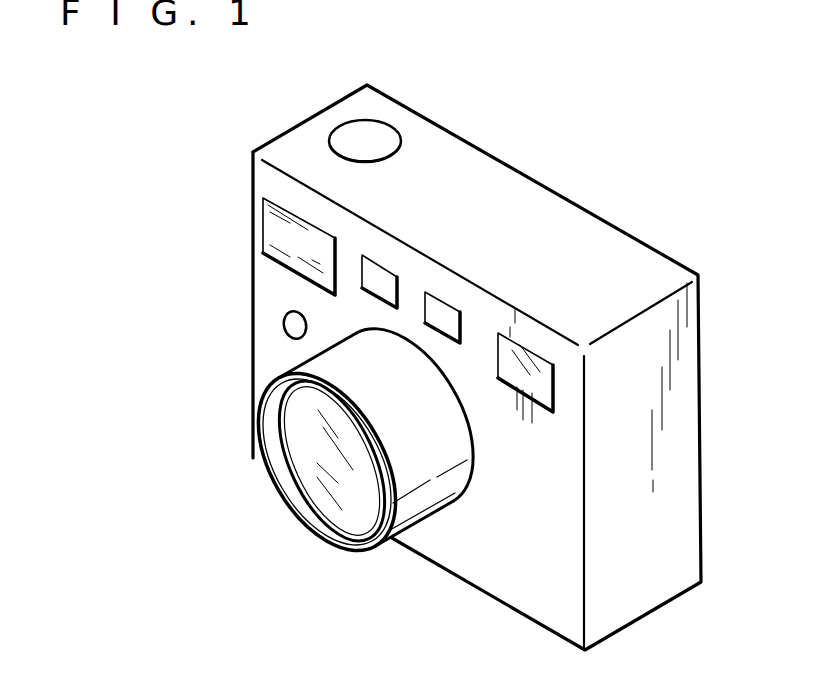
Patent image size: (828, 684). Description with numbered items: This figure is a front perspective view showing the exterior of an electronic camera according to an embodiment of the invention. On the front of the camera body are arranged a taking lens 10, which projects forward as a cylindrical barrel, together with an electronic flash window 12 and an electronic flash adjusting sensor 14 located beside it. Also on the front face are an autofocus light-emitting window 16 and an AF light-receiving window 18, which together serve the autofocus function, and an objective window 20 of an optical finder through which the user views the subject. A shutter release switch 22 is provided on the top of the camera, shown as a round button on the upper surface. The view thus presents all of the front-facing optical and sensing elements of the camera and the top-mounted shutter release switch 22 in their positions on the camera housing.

The taking lens 10 is at (460, 437).
The electronic flash window 12 is at (262, 230).
The electronic flash adjusting sensor 14 is at (283, 322).
The autofocus (AF) light-emitting window 16 is at (388, 268).
The AF light-receiving window 18 is at (447, 305).
The objective window of an optical finder 20 is at (537, 363).
The shutter release switch 22 is at (392, 132).